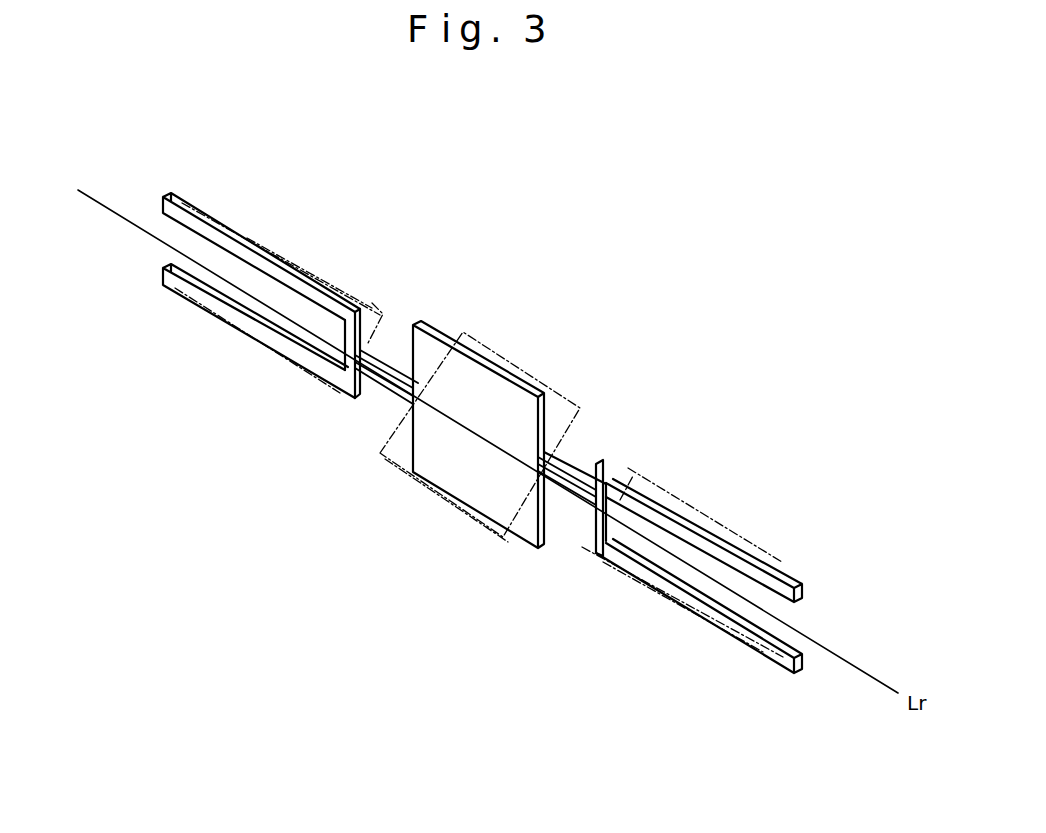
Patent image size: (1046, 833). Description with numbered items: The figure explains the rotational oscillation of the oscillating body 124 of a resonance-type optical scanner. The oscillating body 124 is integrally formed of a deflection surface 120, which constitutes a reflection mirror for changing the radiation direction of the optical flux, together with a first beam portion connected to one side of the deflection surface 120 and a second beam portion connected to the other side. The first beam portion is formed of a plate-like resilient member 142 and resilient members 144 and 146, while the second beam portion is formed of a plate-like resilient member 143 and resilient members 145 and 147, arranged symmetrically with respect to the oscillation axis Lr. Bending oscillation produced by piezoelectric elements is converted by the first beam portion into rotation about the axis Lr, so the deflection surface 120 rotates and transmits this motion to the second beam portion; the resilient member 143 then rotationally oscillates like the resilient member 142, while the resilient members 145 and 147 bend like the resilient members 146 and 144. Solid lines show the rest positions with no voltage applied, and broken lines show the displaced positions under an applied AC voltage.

The deflection surface 120 is at (482, 417).
The oscillating body 124 is at (618, 288).
The plate-like resilient member 142 is at (583, 500).
The plate-like resilient member 143 is at (381, 384).
The resilient member 144 is at (677, 508).
The resilient member 145 is at (245, 327).
The resilient member 146 is at (683, 603).
The resilient member 147 is at (287, 263).